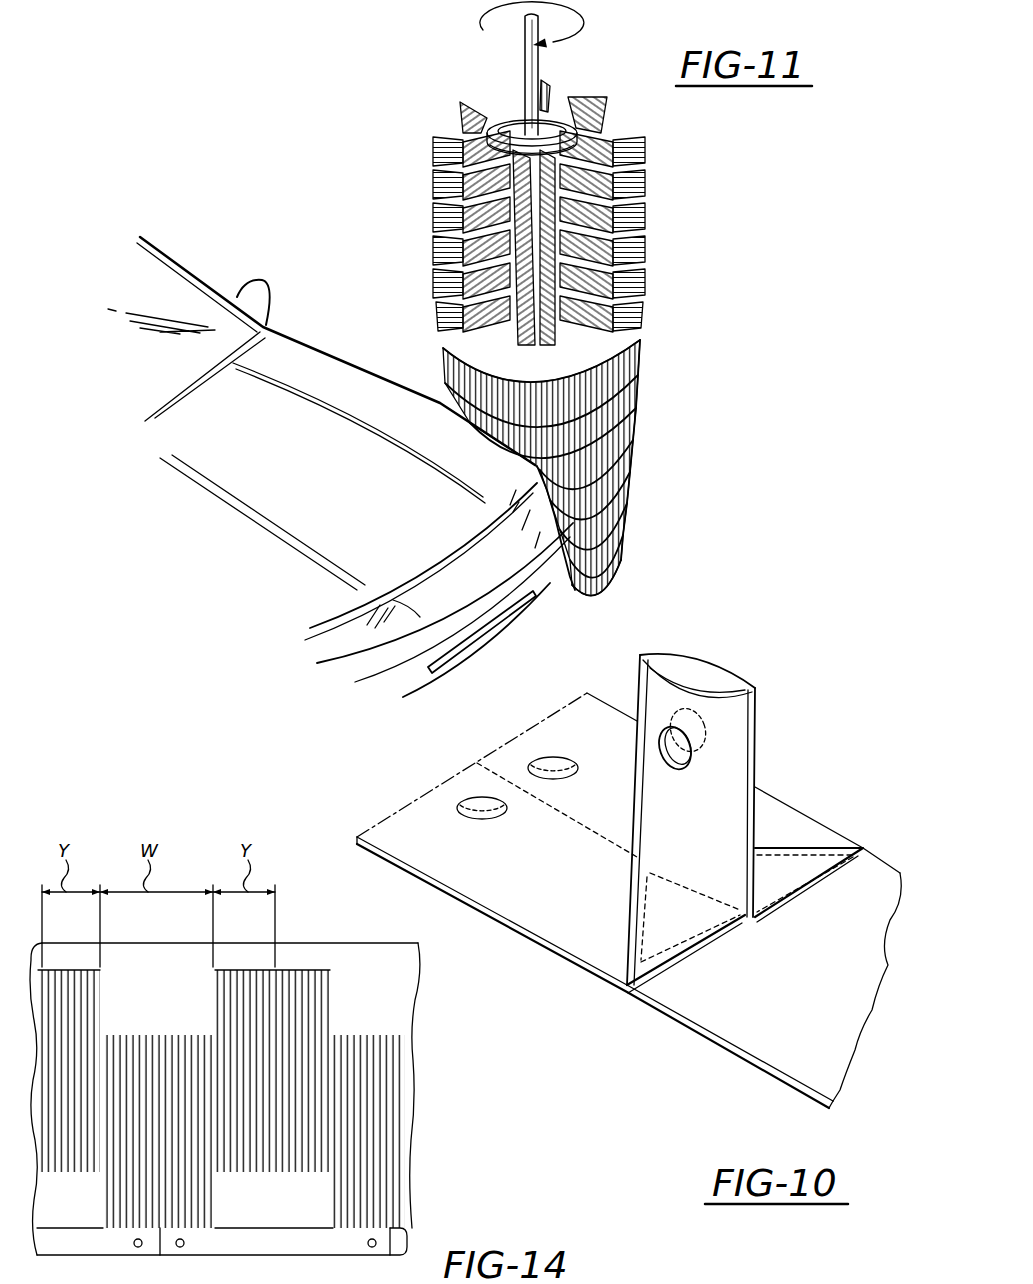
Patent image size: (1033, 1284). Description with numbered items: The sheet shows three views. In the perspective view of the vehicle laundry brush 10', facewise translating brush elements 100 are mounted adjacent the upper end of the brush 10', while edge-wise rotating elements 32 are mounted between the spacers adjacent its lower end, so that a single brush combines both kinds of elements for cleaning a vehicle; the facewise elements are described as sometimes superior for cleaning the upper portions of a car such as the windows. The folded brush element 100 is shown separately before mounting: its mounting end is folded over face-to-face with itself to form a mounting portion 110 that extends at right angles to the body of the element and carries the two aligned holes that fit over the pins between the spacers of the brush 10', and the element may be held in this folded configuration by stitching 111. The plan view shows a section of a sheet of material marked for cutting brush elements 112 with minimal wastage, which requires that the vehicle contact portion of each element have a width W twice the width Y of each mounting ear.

In FIG. 11, the brush 10' is at (553, 299).
In FIG. 11, the brush element 100 is at (440, 265).
In FIG. 10, the brush element 100 is at (700, 1045).
In FIG. 11, the edge-wise rotating elements 32 is at (623, 417).
In FIG. 10, the mounting portion 110 is at (783, 688).
In FIG. 10, the stitching 111 is at (807, 873).
In FIG. 14, the brush elements 112 is at (165, 1011).